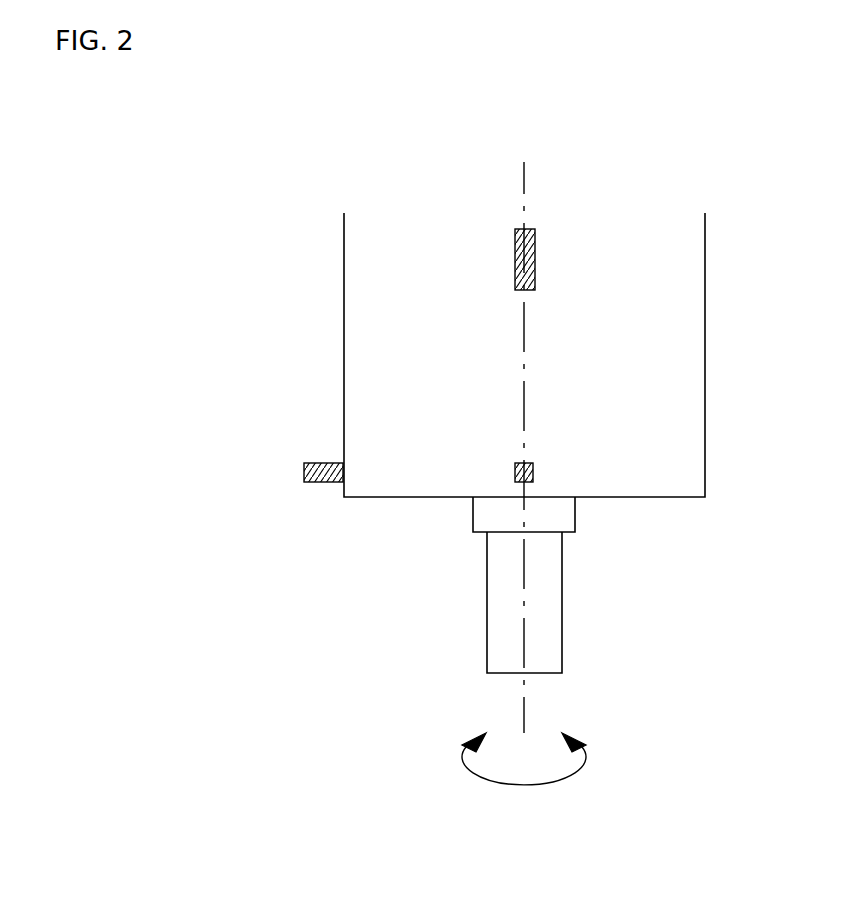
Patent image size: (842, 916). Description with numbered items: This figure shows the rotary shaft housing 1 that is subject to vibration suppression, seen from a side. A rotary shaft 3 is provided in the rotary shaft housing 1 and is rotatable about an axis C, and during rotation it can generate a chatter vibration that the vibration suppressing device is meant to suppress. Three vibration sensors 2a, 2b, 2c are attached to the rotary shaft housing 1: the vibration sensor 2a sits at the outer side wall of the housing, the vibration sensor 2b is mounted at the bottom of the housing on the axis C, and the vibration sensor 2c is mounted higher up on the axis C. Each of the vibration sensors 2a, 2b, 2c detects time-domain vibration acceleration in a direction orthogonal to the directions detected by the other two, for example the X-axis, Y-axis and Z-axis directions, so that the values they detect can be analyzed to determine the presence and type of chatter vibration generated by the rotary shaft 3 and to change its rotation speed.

The rotary shaft housing 1 is at (356, 324).
The vibration sensor 2a is at (304, 471).
The vibration sensor 2b is at (536, 470).
The vibration sensor 2c is at (537, 257).
The rotary shaft 3 is at (497, 601).
The axis C is at (524, 779).